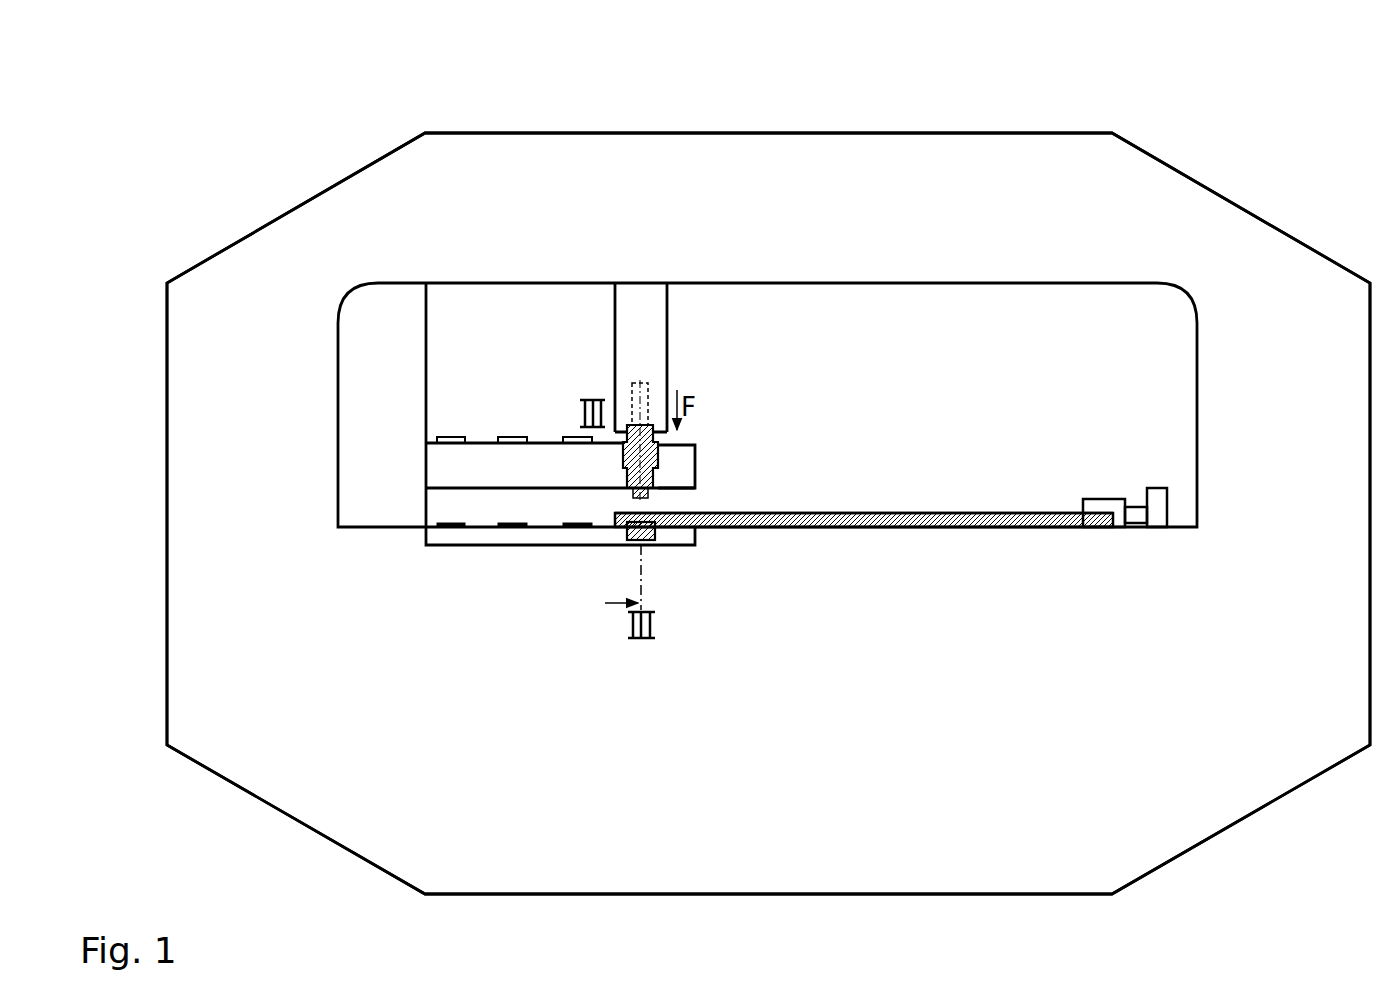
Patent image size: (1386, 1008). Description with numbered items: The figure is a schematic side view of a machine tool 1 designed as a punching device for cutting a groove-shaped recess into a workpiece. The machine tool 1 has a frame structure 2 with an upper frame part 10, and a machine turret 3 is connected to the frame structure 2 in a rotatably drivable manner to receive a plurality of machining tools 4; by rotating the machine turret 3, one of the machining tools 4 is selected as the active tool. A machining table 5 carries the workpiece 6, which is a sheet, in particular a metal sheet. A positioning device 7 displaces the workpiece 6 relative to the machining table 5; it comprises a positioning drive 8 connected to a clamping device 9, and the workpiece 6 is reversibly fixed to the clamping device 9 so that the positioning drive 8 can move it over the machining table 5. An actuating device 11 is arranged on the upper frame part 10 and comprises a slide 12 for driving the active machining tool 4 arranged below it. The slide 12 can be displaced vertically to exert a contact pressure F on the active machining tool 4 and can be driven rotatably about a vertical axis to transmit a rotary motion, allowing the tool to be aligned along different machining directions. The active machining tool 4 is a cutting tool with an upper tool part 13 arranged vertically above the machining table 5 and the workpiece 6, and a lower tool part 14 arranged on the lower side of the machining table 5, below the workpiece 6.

The machine tool 1 is at (155, 132).
The frame structure 2 is at (207, 255).
The machine turret 3 is at (688, 460).
The machining tools 4 is at (615, 462).
The machining table 5 is at (860, 513).
The workpiece 6 is at (816, 513).
The positioning device 7 is at (1133, 495).
The positioning drive 8 is at (1160, 497).
The clamping device 9 is at (1097, 505).
The upper frame part 10 is at (872, 150).
The actuating device 11 is at (632, 310).
The slide 12 is at (648, 400).
The upper tool part 13 is at (620, 427).
The lower tool part 14 is at (627, 535).